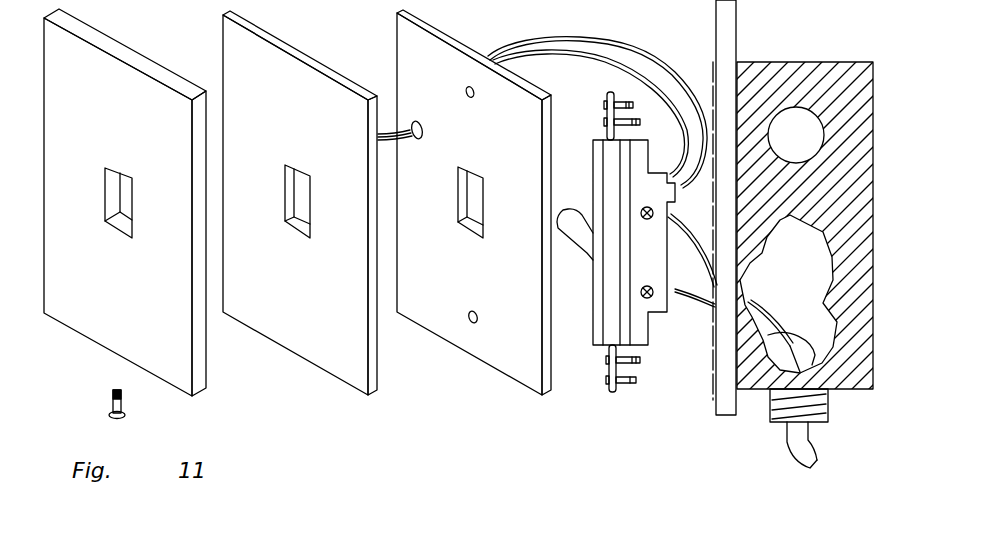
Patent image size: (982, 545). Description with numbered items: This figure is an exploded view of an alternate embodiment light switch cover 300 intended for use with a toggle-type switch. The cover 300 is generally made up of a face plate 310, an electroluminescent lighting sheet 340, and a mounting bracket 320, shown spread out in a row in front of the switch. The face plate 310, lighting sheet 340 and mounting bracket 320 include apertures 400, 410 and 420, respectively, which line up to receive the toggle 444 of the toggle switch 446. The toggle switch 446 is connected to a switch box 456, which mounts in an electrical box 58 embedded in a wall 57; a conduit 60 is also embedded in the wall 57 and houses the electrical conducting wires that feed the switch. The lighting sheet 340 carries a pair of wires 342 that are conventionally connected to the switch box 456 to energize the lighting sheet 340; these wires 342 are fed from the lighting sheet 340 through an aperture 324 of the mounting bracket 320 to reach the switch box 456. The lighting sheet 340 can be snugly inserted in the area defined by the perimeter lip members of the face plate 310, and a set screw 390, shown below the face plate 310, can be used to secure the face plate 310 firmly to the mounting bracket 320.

The light switch cover 300 is at (428, 408).
The face plate 310 is at (160, 288).
The mounting bracket 320 is at (460, 286).
The aperture of mounting bracket 324 is at (415, 125).
The electroluminescent lighting sheet 340 is at (335, 305).
The wires 342 is at (409, 141).
The set screw 390 is at (125, 403).
The aperture of face plate 400 is at (116, 204).
The aperture of lighting sheet 410 is at (296, 205).
The aperture of mounting bracket 420 is at (464, 202).
The toggle 444 is at (560, 223).
The toggle switch 446 is at (623, 140).
The switch box 456 is at (667, 295).
The wall 57 is at (715, 402).
The electrical box 58 is at (855, 196).
The conduit 60 is at (828, 398).